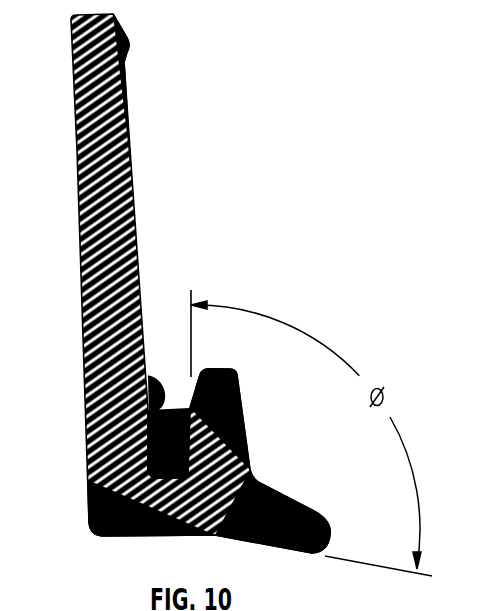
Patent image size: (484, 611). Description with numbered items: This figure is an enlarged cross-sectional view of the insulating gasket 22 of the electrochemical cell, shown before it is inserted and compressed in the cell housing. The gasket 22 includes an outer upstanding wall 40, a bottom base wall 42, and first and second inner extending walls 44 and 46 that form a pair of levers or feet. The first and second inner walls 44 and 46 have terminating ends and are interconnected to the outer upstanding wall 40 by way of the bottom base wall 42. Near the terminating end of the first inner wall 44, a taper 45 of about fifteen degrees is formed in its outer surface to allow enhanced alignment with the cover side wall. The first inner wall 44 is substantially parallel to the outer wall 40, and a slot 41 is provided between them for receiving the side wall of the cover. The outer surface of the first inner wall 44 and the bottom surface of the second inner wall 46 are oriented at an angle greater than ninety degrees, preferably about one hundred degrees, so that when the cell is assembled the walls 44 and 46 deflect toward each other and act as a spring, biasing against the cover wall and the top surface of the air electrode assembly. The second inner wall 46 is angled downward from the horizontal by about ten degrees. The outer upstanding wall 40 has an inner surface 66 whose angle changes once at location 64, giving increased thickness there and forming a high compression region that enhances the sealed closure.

The insulating gasket 22 is at (130, 93).
The outer upstanding wall 40 is at (80, 217).
The slot 41 is at (147, 428).
The bottom base wall 42 is at (120, 536).
The first inner extending wall 44 is at (238, 394).
The taper 45 is at (199, 377).
The second inner extending wall 46 is at (294, 502).
The location of angle change 64 is at (150, 350).
The inner surface 66 is at (148, 376).